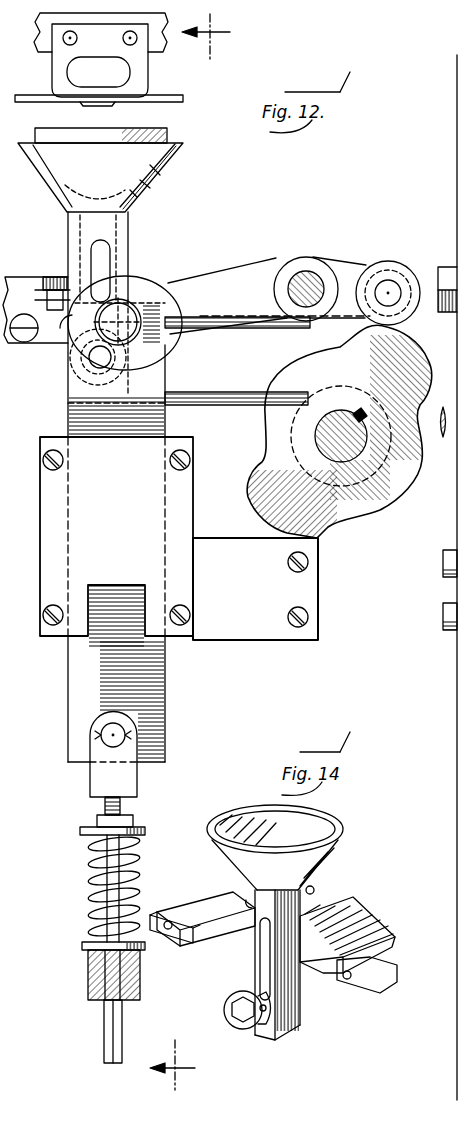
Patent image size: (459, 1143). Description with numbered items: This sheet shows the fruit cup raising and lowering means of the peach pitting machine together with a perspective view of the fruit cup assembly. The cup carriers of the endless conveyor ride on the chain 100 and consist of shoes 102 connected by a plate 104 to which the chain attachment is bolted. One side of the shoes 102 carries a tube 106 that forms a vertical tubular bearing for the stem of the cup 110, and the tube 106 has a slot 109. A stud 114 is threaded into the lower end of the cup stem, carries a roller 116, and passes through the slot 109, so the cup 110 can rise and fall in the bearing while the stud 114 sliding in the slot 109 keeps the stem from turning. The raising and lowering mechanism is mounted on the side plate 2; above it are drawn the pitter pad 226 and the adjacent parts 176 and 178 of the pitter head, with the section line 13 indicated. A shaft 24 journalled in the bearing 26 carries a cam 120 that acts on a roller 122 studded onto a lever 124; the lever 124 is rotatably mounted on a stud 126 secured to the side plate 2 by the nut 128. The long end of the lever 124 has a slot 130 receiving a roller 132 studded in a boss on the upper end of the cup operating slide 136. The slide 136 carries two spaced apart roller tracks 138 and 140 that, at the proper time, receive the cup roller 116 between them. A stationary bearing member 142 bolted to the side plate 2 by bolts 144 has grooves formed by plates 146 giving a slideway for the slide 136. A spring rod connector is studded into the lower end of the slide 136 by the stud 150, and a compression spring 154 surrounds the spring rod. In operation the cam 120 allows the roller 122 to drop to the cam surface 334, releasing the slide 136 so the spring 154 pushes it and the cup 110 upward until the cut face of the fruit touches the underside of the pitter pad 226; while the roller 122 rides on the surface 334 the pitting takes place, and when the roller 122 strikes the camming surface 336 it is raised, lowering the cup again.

In FIG. 12, the side plate 2 is at (456, 507).
In FIG. 12, the section line 13- 13 is at (144, 1116).
In FIG. 12, the shaft 24 is at (367, 493).
In FIG. 12, the bearing 26 is at (300, 425).
In FIG. 14, the chain 100 is at (173, 940).
In FIG. 14, the shoes 102 is at (363, 917).
In FIG. 12, the plate 104 is at (68, 260).
In FIG. 14, the plate 104 is at (270, 876).
In FIG. 14, the tube 106 is at (292, 987).
In FIG. 14, the slot 109 is at (262, 968).
In FIG. 12, the cup 110 is at (160, 178).
In FIG. 14, the cup 110 is at (310, 860).
In FIG. 12, the stud 114 is at (80, 362).
In FIG. 14, the stud 114 is at (266, 1010).
In FIG. 12, the roller 116 is at (130, 368).
In FIG. 14, the roller 116 is at (258, 1030).
In FIG. 12, the cam 120 is at (275, 500).
In FIG. 12, the roller 122 is at (383, 263).
In FIG. 12, the lever 124 is at (240, 272).
In FIG. 12, the stud 126 is at (311, 270).
In FIG. 12, the nut 128 is at (442, 267).
In FIG. 12, the slot 130 is at (143, 302).
In FIG. 12, the roller 132 is at (129, 300).
In FIG. 12, the cup operating slide 136 is at (153, 698).
In FIG. 12, the roller track 138 is at (288, 332).
In FIG. 12, the roller track 140 is at (236, 396).
In FIG. 12, the bearing member 142 is at (255, 589).
In FIG. 12, the bolts 144 is at (310, 565).
In FIG. 12, the plates 146 is at (53, 478).
In FIG. 12, the stud 150 is at (117, 737).
In FIG. 12, the compression spring 154 is at (90, 872).
In FIG. 12, the block 176 is at (143, 78).
In FIG. 12, the support bracket 178 is at (42, 43).
In FIG. 12, the pitter pad 226 is at (183, 100).
In FIG. 12, the cam surface 334 is at (297, 364).
In FIG. 12, the camming surface 336 is at (221, 494).